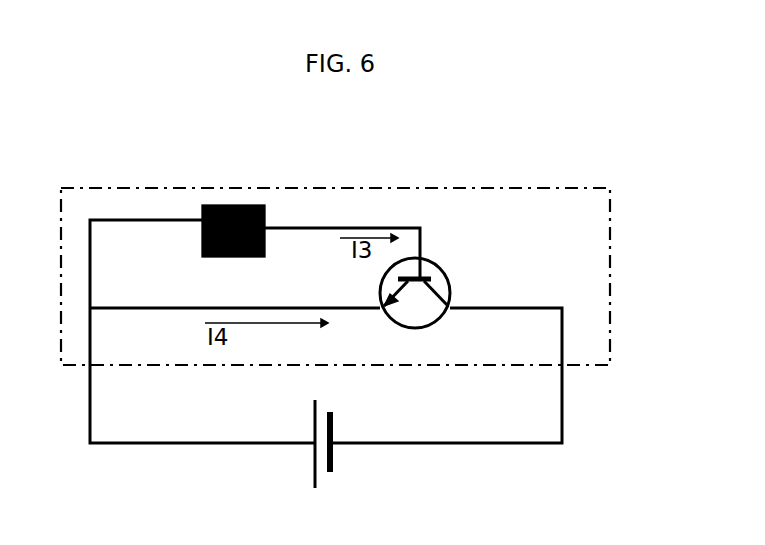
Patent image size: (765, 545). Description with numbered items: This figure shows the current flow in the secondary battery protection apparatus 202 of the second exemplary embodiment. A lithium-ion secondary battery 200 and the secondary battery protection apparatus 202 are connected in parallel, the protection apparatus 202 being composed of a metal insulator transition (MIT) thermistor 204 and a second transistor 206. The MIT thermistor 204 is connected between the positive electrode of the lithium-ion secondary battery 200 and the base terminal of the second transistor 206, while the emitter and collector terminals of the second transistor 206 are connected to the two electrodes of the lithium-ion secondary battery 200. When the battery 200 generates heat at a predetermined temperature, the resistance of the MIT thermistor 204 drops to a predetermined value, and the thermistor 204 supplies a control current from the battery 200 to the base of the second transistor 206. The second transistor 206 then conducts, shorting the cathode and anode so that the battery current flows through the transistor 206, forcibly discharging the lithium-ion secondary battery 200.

The lithium-ion secondary battery 200 is at (331, 432).
The secondary battery protection apparatus 202 is at (375, 188).
The metal insulator transition (MIT) thermistor 204 is at (228, 206).
The second transistor 206 is at (450, 285).